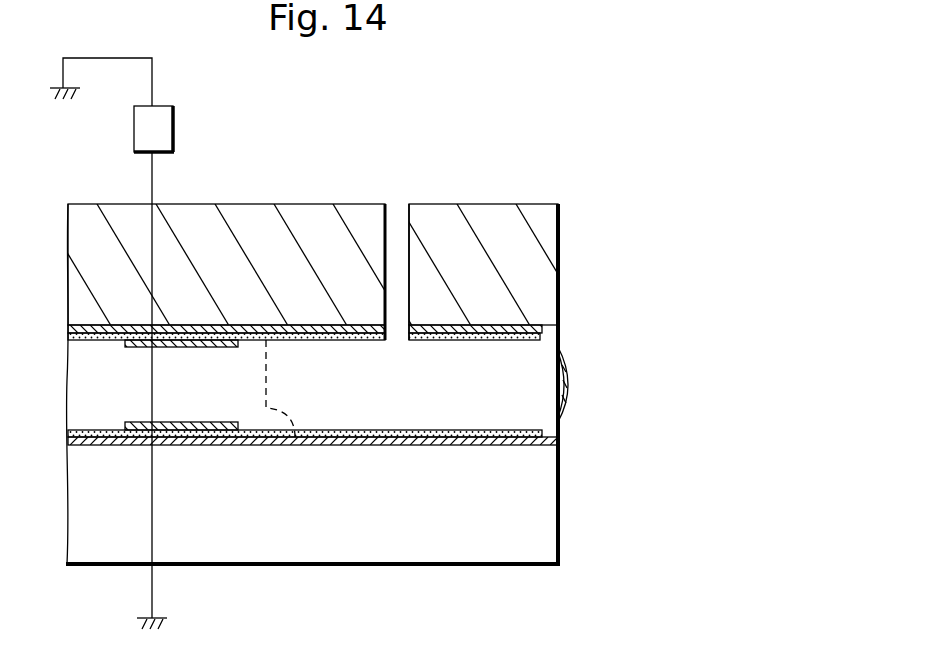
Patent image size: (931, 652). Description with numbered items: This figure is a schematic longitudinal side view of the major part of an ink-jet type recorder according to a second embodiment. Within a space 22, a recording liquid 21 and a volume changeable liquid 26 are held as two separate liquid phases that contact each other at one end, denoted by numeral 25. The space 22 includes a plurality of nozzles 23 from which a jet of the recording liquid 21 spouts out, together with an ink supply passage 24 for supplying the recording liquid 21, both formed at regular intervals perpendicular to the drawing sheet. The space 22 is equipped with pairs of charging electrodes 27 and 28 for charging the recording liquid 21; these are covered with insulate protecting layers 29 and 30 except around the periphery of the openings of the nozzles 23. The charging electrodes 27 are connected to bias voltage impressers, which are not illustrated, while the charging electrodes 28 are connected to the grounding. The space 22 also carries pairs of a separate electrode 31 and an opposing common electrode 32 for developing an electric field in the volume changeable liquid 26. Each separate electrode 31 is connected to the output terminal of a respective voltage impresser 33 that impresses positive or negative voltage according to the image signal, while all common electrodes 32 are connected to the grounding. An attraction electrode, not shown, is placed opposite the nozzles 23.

The recording liquid 21 is at (382, 399).
The space 22 is at (318, 160).
The nozzle 23 is at (572, 404).
The ink supply slot 24 is at (398, 208).
The contact end of liquid phases 25 is at (295, 437).
The volume changeable liquid 26 is at (85, 397).
The charging electrode 27 is at (500, 323).
The charging electrode 28 is at (497, 446).
The insulate protecting layer 29 is at (528, 338).
The insulate protecting layer 30 is at (512, 428).
The separate electrode 31 is at (202, 342).
The common electrode 32 is at (197, 440).
The voltage impresser 33 is at (134, 130).